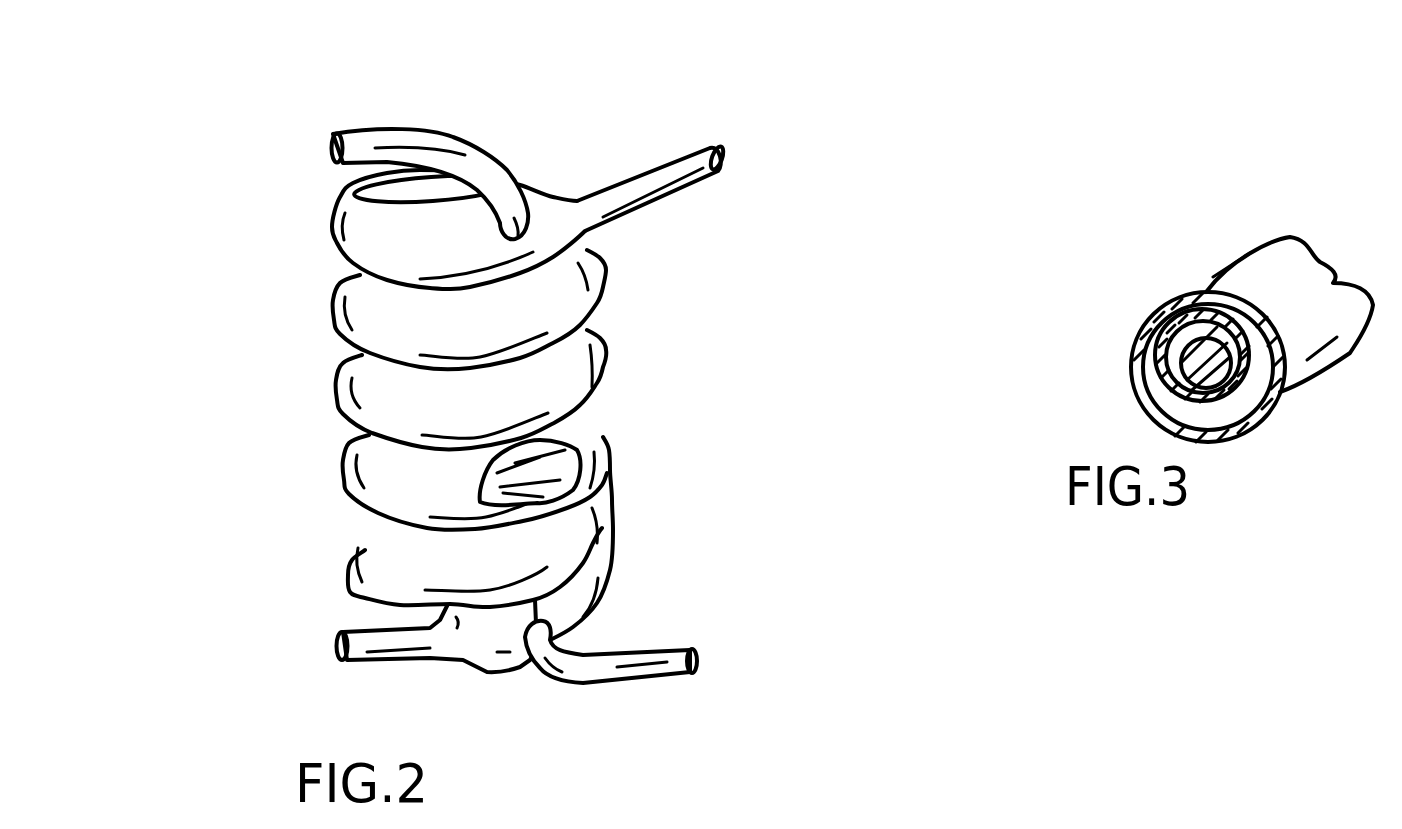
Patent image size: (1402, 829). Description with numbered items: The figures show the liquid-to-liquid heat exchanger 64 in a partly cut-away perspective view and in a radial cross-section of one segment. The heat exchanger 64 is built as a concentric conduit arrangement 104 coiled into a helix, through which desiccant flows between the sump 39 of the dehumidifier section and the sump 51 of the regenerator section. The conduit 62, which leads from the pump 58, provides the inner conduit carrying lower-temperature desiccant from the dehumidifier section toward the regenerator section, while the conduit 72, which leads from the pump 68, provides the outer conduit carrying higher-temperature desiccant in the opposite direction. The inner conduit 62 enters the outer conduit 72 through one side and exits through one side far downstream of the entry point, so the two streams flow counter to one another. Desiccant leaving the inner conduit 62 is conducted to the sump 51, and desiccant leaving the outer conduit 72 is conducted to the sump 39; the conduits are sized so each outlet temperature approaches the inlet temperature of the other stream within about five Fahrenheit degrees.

In FIG. 2, the inner conduit 62 is at (390, 133).
In FIG. 3, the inner conduit 62 is at (1147, 324).
In FIG. 2, the heat exchanger 64 is at (500, 162).
In FIG. 3, the heat exchanger 64 is at (1212, 265).
In FIG. 2, the outer conduit 72 is at (690, 196).
In FIG. 3, the outer conduit 72 is at (1283, 397).
In FIG. 2, the concentric conduit arrangement 104 is at (613, 503).
In FIG. 2, the sump of the regenerator section 51 is at (315, 145).
In FIG. 2, the pump 68 is at (762, 139).
In FIG. 2, the sump of the dehumidifier section 39 is at (320, 650).
In FIG. 2, the pump 58 is at (730, 660).